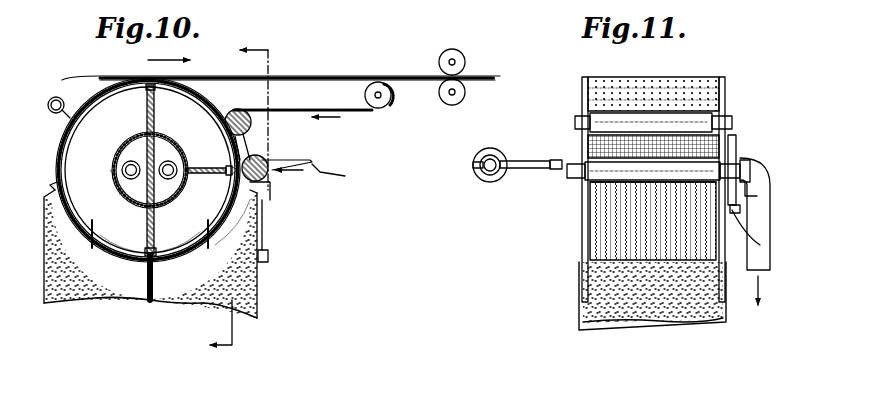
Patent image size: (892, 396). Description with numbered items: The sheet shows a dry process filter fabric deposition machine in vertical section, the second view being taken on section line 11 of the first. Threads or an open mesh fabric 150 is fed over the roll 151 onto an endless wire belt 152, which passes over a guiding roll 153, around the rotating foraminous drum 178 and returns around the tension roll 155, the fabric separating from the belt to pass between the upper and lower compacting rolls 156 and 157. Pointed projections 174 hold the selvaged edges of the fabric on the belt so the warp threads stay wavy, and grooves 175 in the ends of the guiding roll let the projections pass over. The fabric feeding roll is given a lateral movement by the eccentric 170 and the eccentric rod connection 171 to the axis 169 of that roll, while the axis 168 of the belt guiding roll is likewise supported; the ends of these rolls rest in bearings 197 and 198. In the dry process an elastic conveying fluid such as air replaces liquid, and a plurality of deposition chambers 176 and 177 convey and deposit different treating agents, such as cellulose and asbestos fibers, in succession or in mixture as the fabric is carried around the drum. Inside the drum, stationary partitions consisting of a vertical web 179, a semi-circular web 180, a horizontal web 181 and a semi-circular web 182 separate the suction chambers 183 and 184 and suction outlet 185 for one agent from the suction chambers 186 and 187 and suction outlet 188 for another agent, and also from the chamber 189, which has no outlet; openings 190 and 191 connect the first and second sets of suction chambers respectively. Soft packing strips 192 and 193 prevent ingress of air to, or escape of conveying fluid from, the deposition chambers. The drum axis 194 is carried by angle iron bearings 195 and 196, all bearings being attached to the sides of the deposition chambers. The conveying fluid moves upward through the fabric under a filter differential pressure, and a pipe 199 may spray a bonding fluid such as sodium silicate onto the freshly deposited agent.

In FIG. 10, the section line 11 is at (252, 199).
In FIG. 10, the open mesh fabric 150 is at (323, 175).
In FIG. 10, the roll 151 is at (265, 160).
In FIG. 10, the endless wire belt 152 is at (360, 112).
In FIG. 10, the guiding roll 153 is at (250, 125).
In FIG. 10, the tension roll 155 is at (375, 82).
In FIG. 10, the upper compacting roll 156 is at (458, 60).
In FIG. 10, the lower compacting roll 157 is at (460, 100).
In FIG. 11, the axis of belt guiding roll 168 is at (573, 122).
In FIG. 11, the axis of fabric feeding roll 169 is at (572, 182).
In FIG. 11, the eccentric 170 is at (480, 178).
In FIG. 11, the eccentric rod connection 171 is at (520, 172).
In FIG. 10, the pointed projections 174 is at (392, 103).
In FIG. 11, the grooves 175 is at (732, 120).
In FIG. 10, the deposition chamber 176 is at (100, 308).
In FIG. 10, the deposition chamber 177 is at (225, 302).
In FIG. 10, the rotating foraminous drum 178 is at (255, 112).
In FIG. 10, the vertical web 179 is at (146, 110).
In FIG. 10, the semi-circular web 180 is at (125, 140).
In FIG. 10, the horizontal web 181 is at (210, 167).
In FIG. 10, the semi-circular web 182 is at (178, 195).
In FIG. 10, the suction chamber 183 is at (72, 146).
In FIG. 10, the suction chamber 184 is at (135, 218).
In FIG. 10, the suction outlet 185 is at (124, 172).
In FIG. 10, the suction chamber 186 is at (238, 255).
In FIG. 10, the suction chamber 187 is at (170, 188).
In FIG. 10, the suction outlet 188 is at (172, 164).
In FIG. 11, the suction outlet 188 is at (770, 200).
In FIG. 10, the chamber 189 is at (170, 104).
In FIG. 10, the opening 190 is at (125, 200).
In FIG. 10, the opening 191 is at (175, 245).
In FIG. 10, the soft packing strip 192 is at (50, 185).
In FIG. 10, the soft packing strip 193 is at (205, 222).
In FIG. 11, the drum axis 194 is at (567, 163).
In FIG. 11, the angle iron bearing 195 is at (574, 300).
In FIG. 11, the angle iron bearing 196 is at (762, 229).
In FIG. 11, the bearing 197 is at (572, 163).
In FIG. 11, the bearing 198 is at (742, 162).
In FIG. 10, the pipe 199 is at (56, 97).